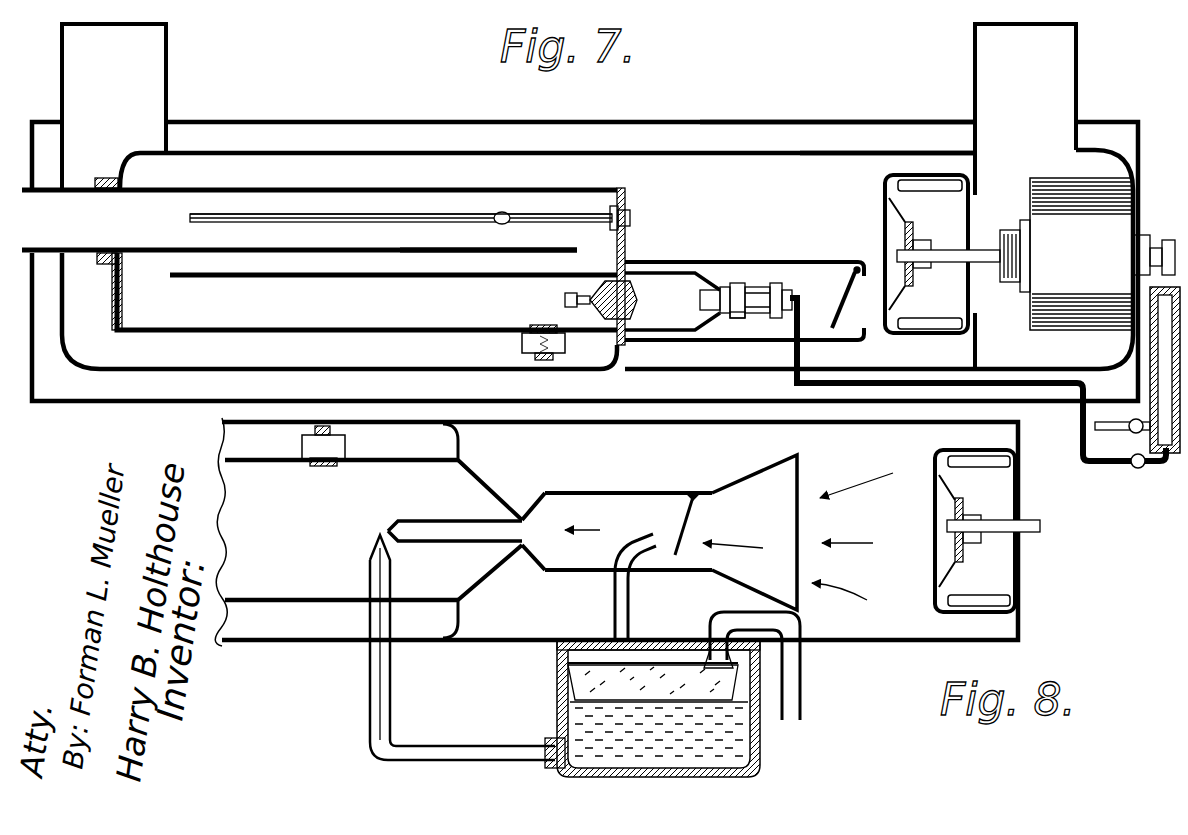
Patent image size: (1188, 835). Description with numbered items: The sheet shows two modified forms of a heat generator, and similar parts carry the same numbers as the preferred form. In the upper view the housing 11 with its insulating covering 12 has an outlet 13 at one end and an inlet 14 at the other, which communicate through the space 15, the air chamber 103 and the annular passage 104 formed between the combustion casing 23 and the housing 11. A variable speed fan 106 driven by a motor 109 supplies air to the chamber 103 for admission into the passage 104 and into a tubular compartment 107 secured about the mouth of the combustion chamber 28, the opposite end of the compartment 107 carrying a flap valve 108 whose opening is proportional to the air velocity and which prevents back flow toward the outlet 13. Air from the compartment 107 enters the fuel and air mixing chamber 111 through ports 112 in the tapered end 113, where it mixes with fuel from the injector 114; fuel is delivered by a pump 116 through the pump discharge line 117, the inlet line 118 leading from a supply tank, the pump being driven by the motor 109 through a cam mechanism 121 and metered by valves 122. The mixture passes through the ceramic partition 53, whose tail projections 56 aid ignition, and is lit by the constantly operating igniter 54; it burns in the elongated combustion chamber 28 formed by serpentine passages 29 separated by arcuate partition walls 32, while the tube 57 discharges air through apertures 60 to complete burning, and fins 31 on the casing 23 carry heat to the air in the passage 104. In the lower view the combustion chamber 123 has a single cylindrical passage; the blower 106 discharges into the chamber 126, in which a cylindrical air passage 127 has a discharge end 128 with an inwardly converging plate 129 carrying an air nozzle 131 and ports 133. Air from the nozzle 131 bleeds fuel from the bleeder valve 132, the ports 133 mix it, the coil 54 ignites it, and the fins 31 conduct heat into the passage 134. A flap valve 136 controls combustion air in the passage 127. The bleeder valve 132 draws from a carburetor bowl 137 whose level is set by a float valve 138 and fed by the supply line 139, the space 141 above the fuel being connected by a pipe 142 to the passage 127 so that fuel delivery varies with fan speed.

In FIG. 7, the housing 11 is at (798, 119).
In FIG. 7, the insulating covering 12 is at (703, 119).
In FIG. 7, the outlet 13 is at (166, 50).
In FIG. 7, the inlet 14 is at (1078, 45).
In FIG. 7, the space 15 is at (1001, 239).
In FIG. 7, the casing 23 is at (287, 190).
In FIG. 7, the combustion chamber 28 is at (312, 310).
In FIG. 7, the passages 29 is at (425, 207).
In FIG. 7, the fins 31 is at (590, 167).
In FIG. 8, the fins 31 is at (450, 618).
In FIG. 7, the partition walls 32 is at (487, 256).
In FIG. 7, the ceramic partition 53 is at (560, 297).
In FIG. 7, the igniter 54 is at (522, 345).
In FIG. 8, the igniter 54 is at (346, 447).
In FIG. 7, the tail projections 56 is at (590, 300).
In FIG. 7, the tube 57 is at (222, 213).
In FIG. 7, the apertures 60 is at (190, 218).
In FIG. 7, the air chamber 103 is at (832, 180).
In FIG. 7, the annular passage 104 is at (360, 160).
In FIG. 7, the fan 106 is at (947, 181).
In FIG. 8, the fan 106 is at (988, 458).
In FIG. 7, the compartment 107 is at (828, 268).
In FIG. 7, the flap valve 108 is at (843, 308).
In FIG. 7, the motor 109 is at (1075, 254).
In FIG. 7, the fuel and air mixing chamber 111 is at (667, 295).
In FIG. 7, the ports 112 is at (722, 285).
In FIG. 7, the tapered end 113 is at (724, 316).
In FIG. 7, the injector 114 is at (756, 285).
In FIG. 7, the pump 116 is at (1165, 340).
In FIG. 7, the pump discharge line 117 is at (1083, 462).
In FIG. 7, the inlet line 118 is at (1112, 430).
In FIG. 7, the cam mechanism 121 is at (1167, 240).
In FIG. 7, the valves 122 is at (1136, 433).
In FIG. 8, the combustion chamber 123 is at (616, 532).
In FIG. 8, the chamber 126 is at (730, 529).
In FIG. 8, the air passage 127 is at (645, 492).
In FIG. 8, the discharge end 128 is at (503, 497).
In FIG. 8, the converging plate 129 is at (490, 489).
In FIG. 8, the air nozzle 131 is at (450, 542).
In FIG. 8, the bleeder valve 132 is at (377, 573).
In FIG. 8, the ports 133 is at (510, 505).
In FIG. 8, the passage 134 is at (303, 622).
In FIG. 8, the flap valve 136 is at (697, 520).
In FIG. 8, the carburetor bowl 137 is at (758, 748).
In FIG. 8, the float valve 138 is at (580, 690).
In FIG. 8, the supply line 139 is at (803, 678).
In FIG. 8, the space 141 is at (565, 662).
In FIG. 8, the pipe 142 is at (613, 600).